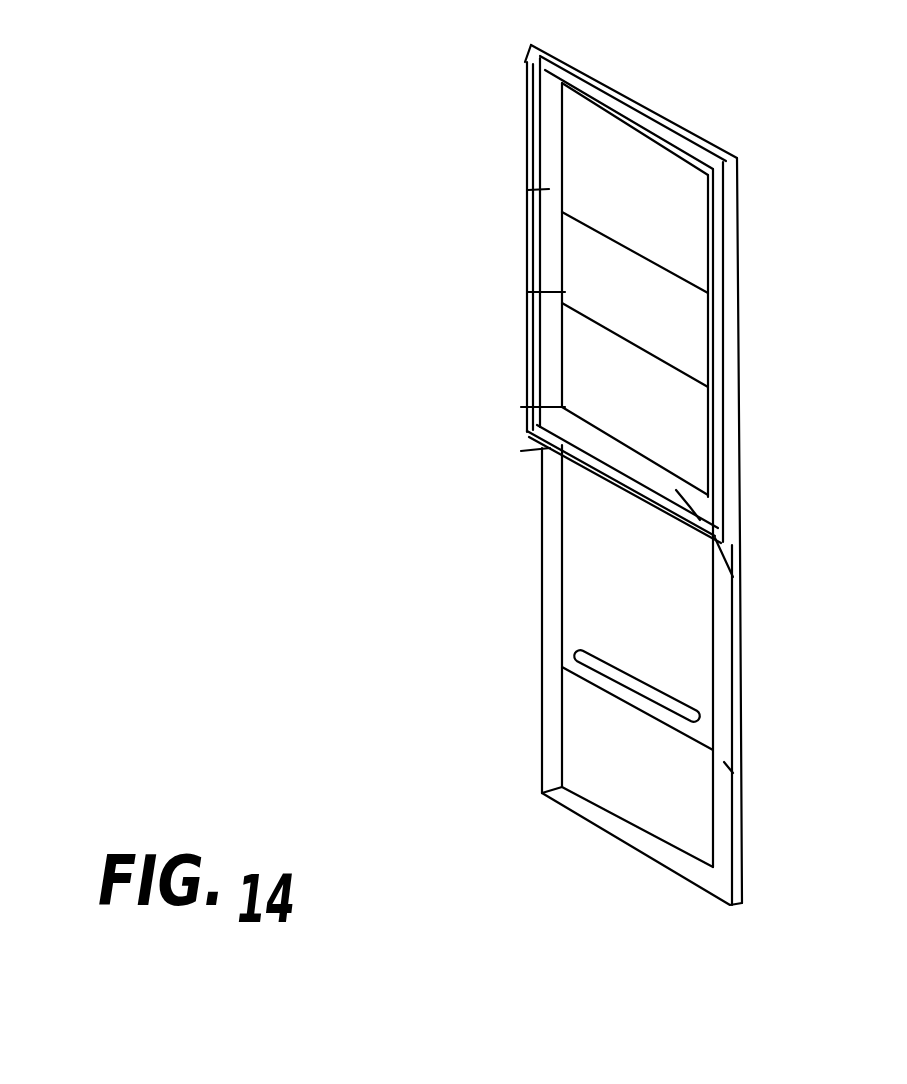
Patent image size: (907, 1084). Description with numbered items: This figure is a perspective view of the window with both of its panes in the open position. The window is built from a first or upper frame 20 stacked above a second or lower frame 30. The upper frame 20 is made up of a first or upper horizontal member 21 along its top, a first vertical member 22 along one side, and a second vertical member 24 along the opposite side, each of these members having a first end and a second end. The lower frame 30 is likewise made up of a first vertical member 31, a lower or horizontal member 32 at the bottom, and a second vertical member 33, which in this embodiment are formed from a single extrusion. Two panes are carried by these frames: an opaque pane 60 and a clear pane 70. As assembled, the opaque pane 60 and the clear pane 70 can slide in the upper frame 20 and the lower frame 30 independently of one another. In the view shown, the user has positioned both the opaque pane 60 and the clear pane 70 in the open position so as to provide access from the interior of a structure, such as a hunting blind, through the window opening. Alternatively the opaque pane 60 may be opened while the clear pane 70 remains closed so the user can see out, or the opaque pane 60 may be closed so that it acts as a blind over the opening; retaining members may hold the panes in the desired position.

The upper frame 20 is at (618, 295).
The upper horizontal member 21 is at (677, 142).
The first vertical member 22 is at (733, 413).
The second vertical member 24 is at (540, 240).
The opaque pane 60 is at (680, 337).
The lower frame 30 is at (668, 707).
The first vertical member 31 is at (727, 720).
The lower horizontal member 32 is at (662, 853).
The second vertical member 33 is at (550, 628).
The clear pane 70 is at (682, 625).